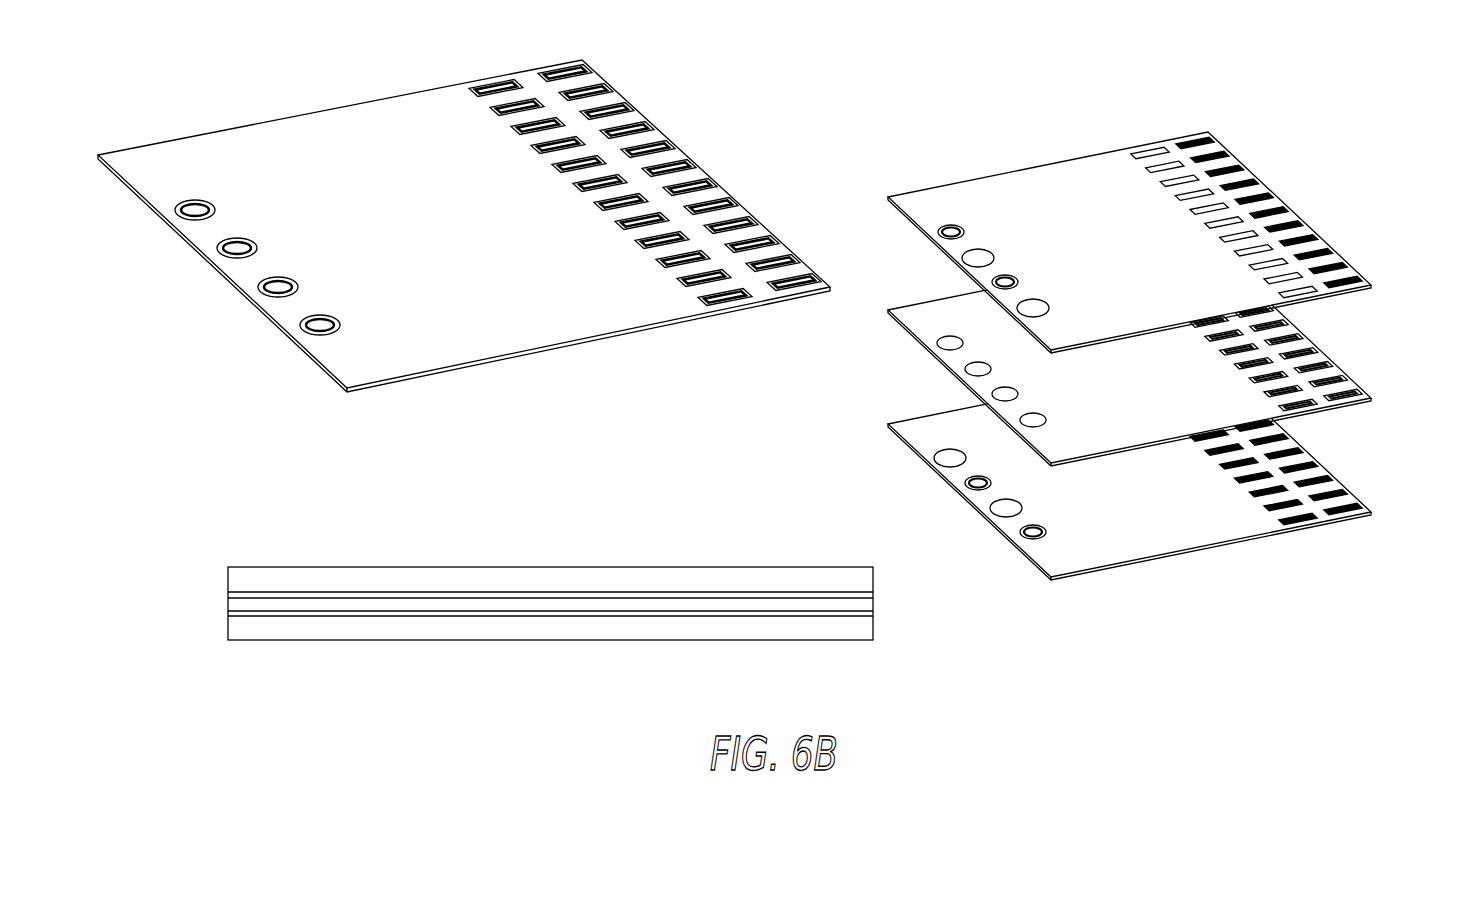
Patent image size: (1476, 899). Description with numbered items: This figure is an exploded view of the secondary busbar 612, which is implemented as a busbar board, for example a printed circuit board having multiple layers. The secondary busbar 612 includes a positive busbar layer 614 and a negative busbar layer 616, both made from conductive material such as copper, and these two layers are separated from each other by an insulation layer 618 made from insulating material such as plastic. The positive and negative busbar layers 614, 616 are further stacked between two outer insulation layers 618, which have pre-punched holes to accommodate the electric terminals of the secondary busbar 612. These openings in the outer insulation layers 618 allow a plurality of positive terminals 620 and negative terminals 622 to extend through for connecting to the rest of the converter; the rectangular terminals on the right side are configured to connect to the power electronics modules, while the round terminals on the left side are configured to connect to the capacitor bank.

The secondary busbar 612 is at (268, 122).
The positive busbar layer 614 is at (1218, 143).
The negative busbar layer 616 is at (1173, 552).
The insulation layer 618 is at (1320, 350).
The positive terminals 620 is at (177, 213).
The negative terminals 622 is at (217, 247).